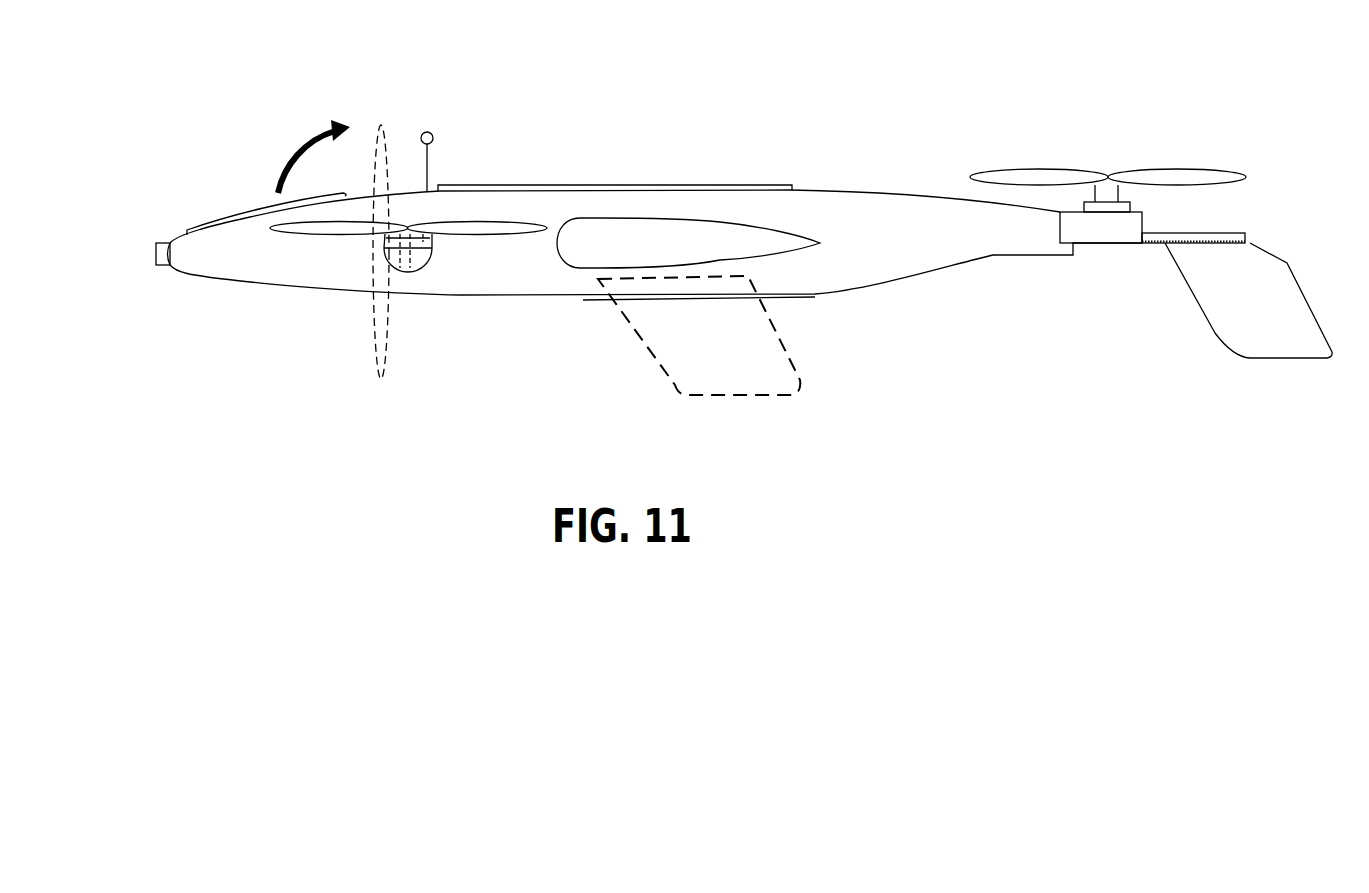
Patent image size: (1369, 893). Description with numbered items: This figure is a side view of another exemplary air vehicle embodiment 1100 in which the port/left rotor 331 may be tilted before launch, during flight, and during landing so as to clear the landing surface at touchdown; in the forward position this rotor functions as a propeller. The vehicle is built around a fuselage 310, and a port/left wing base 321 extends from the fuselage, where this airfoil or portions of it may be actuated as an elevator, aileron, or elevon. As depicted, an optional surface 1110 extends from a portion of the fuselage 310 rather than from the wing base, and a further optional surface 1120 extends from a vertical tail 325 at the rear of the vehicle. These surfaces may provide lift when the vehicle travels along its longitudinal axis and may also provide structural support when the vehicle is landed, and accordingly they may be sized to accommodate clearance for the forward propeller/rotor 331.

The air vehicle embodiment 1100 is at (198, 160).
The port/left rotor 331 is at (490, 277).
The port/left wing base 321 is at (820, 245).
The fuselage 310 is at (938, 257).
The optional surface 1110 is at (790, 412).
The vertical tail 325 is at (1205, 232).
The optional surface 1120 is at (1220, 363).